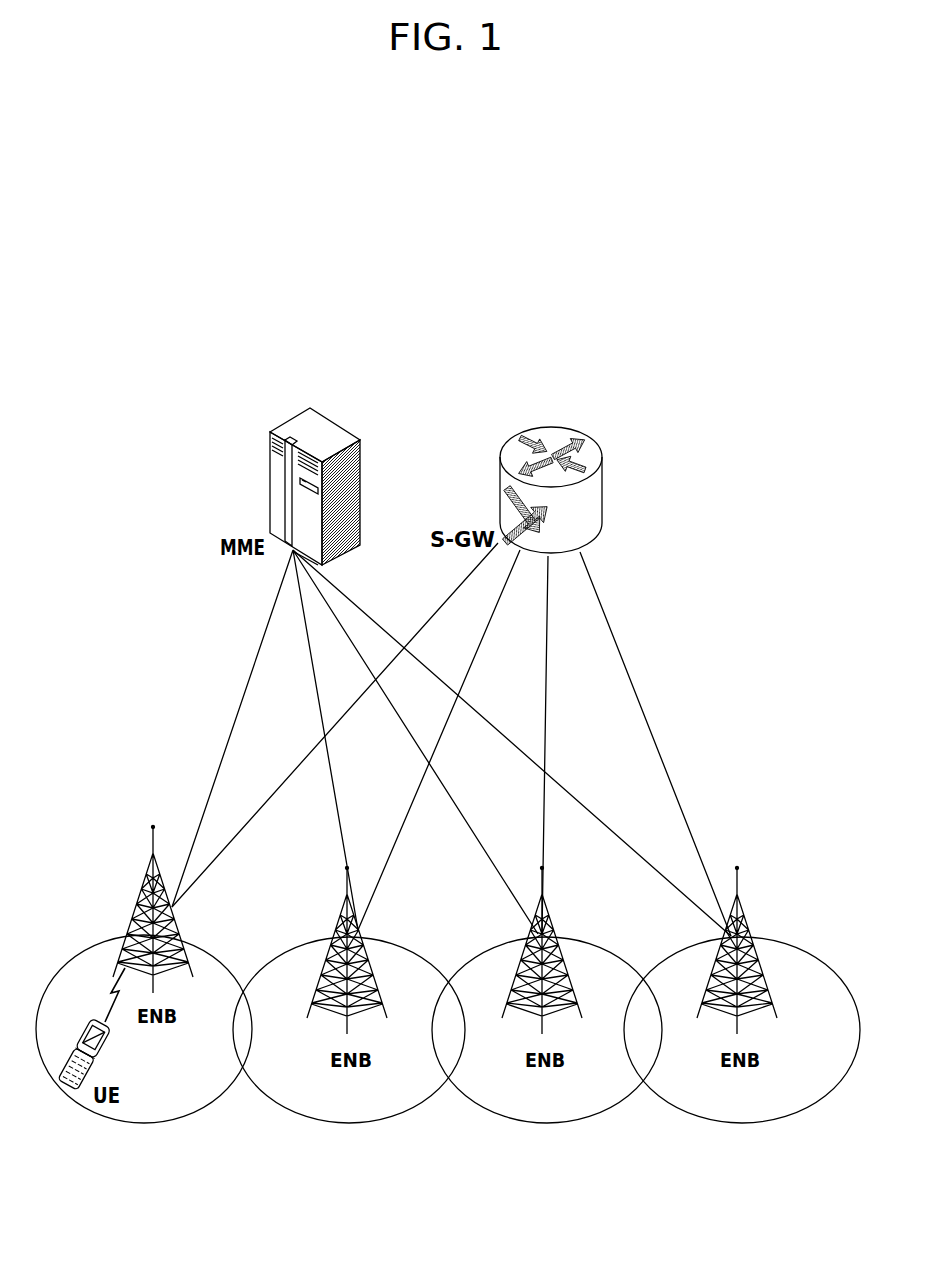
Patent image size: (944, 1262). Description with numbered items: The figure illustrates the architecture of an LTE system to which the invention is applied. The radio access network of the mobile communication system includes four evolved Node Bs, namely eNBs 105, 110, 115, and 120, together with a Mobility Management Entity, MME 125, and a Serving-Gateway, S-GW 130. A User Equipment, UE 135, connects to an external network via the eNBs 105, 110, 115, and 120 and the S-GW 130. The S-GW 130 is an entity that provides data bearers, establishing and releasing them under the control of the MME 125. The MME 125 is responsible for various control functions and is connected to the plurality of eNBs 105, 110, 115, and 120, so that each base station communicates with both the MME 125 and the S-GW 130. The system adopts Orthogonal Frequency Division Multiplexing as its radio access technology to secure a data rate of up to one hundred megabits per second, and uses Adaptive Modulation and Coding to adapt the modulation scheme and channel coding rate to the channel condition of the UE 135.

The evolved Node B 105 is at (140, 887).
The evolved Node B 110 is at (340, 912).
The evolved Node B 115 is at (552, 912).
The evolved Node B 120 is at (745, 912).
The Mobility Management Entity 125 is at (300, 428).
The Serving-Gateway 130 is at (548, 437).
The User Equipment 135 is at (102, 1050).